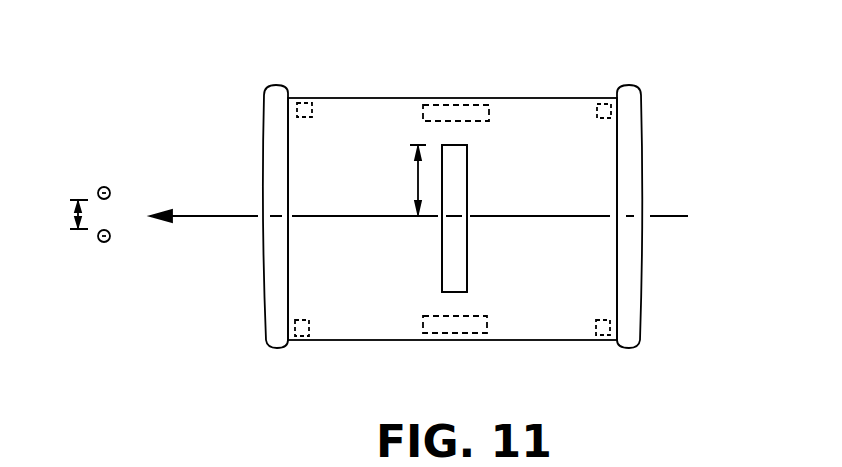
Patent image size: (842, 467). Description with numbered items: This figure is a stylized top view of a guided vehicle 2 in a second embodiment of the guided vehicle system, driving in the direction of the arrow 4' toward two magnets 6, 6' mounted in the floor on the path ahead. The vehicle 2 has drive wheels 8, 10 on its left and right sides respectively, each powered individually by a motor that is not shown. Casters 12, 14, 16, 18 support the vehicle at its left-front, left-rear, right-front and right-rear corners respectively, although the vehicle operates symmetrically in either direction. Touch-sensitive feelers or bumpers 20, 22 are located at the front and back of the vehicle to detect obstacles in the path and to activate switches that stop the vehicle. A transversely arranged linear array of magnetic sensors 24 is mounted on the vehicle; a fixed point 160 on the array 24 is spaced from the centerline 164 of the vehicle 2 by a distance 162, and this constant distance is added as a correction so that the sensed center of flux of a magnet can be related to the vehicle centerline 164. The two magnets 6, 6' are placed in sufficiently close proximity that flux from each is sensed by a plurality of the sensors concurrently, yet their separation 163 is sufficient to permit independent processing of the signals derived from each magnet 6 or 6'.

The guided vehicle 2 is at (522, 98).
The arrow 4' is at (174, 194).
The magnet 6 is at (113, 259).
The magnet 6' is at (116, 167).
The drive wheel 8 is at (470, 333).
The drive wheel 10 is at (445, 105).
The caster 12 is at (305, 337).
The caster 14 is at (607, 336).
The caster 16 is at (307, 99).
The caster 18 is at (600, 104).
The touch-sensitive feeler or bumper 20 is at (265, 292).
The touch-sensitive feeler or bumper 22 is at (641, 292).
The linear array of magnetic sensors 24 is at (468, 268).
The fixed point 160 is at (452, 145).
The distance 162 is at (416, 178).
The separation 163 is at (68, 214).
The centerline 164 is at (669, 216).